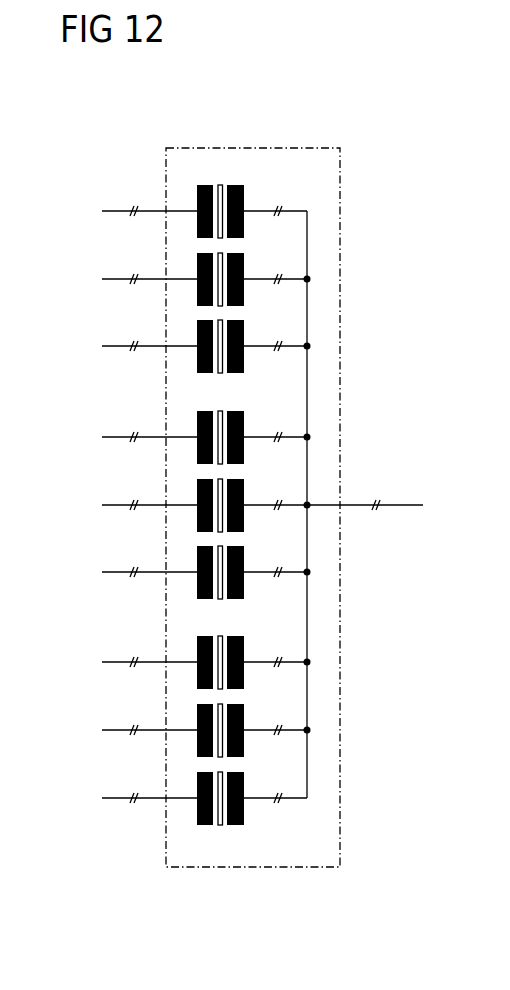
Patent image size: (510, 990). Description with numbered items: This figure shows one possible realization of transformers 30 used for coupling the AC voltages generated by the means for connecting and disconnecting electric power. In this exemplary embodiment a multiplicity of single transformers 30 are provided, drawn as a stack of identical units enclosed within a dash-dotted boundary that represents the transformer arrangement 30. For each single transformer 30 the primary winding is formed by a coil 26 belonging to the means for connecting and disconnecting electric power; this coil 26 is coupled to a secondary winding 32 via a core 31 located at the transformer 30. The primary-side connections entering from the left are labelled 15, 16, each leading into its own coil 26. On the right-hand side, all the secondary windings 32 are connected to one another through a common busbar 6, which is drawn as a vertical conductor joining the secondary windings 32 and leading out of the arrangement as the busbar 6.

The busbar 6 is at (422, 505).
The input line 15 is at (112, 210).
The input line 16 is at (112, 436).
The coil 26 is at (205, 185).
The transformer 30 is at (258, 185).
The core 31 is at (221, 185).
The secondary winding 32 is at (244, 301).